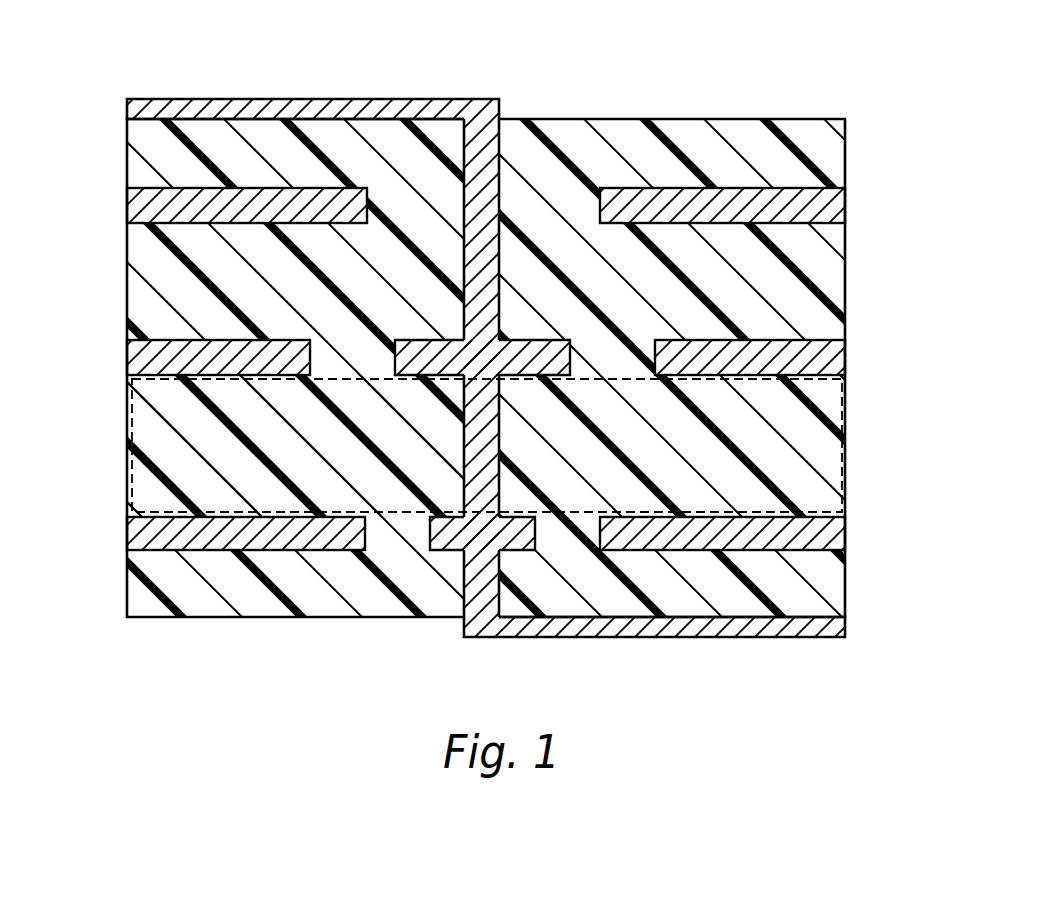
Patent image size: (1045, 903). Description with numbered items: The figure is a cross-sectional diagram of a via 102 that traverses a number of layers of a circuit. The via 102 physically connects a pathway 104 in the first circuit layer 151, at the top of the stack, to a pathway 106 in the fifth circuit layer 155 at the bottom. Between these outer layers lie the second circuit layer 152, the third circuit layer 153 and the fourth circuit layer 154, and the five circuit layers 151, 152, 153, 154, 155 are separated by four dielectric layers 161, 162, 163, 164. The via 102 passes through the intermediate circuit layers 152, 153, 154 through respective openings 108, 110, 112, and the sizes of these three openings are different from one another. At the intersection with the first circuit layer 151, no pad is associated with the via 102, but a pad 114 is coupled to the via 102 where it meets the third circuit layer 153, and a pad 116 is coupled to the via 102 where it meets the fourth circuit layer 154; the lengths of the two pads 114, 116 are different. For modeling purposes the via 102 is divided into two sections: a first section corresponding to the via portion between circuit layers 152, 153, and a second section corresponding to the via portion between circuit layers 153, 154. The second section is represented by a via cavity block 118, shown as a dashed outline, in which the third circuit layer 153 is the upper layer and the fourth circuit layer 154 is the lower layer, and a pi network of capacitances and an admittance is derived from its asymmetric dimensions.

The via 102 is at (500, 193).
The pathway 104 is at (265, 99).
The pathway 106 is at (718, 637).
The opening 108 is at (390, 185).
The opening 110 is at (358, 385).
The opening 112 is at (403, 556).
The pad 114 is at (413, 338).
The pad 116 is at (520, 513).
The via cavity block 118 is at (185, 413).
The circuit layer 1 151 is at (143, 108).
The circuit layer 2 152 is at (202, 202).
The circuit layer 3 153 is at (200, 355).
The circuit layer 4 154 is at (205, 530).
The circuit layer 5 155 is at (817, 625).
The dielectric layer 161 is at (825, 156).
The dielectric layer 162 is at (778, 288).
The dielectric layer 163 is at (783, 457).
The dielectric layer 164 is at (793, 588).